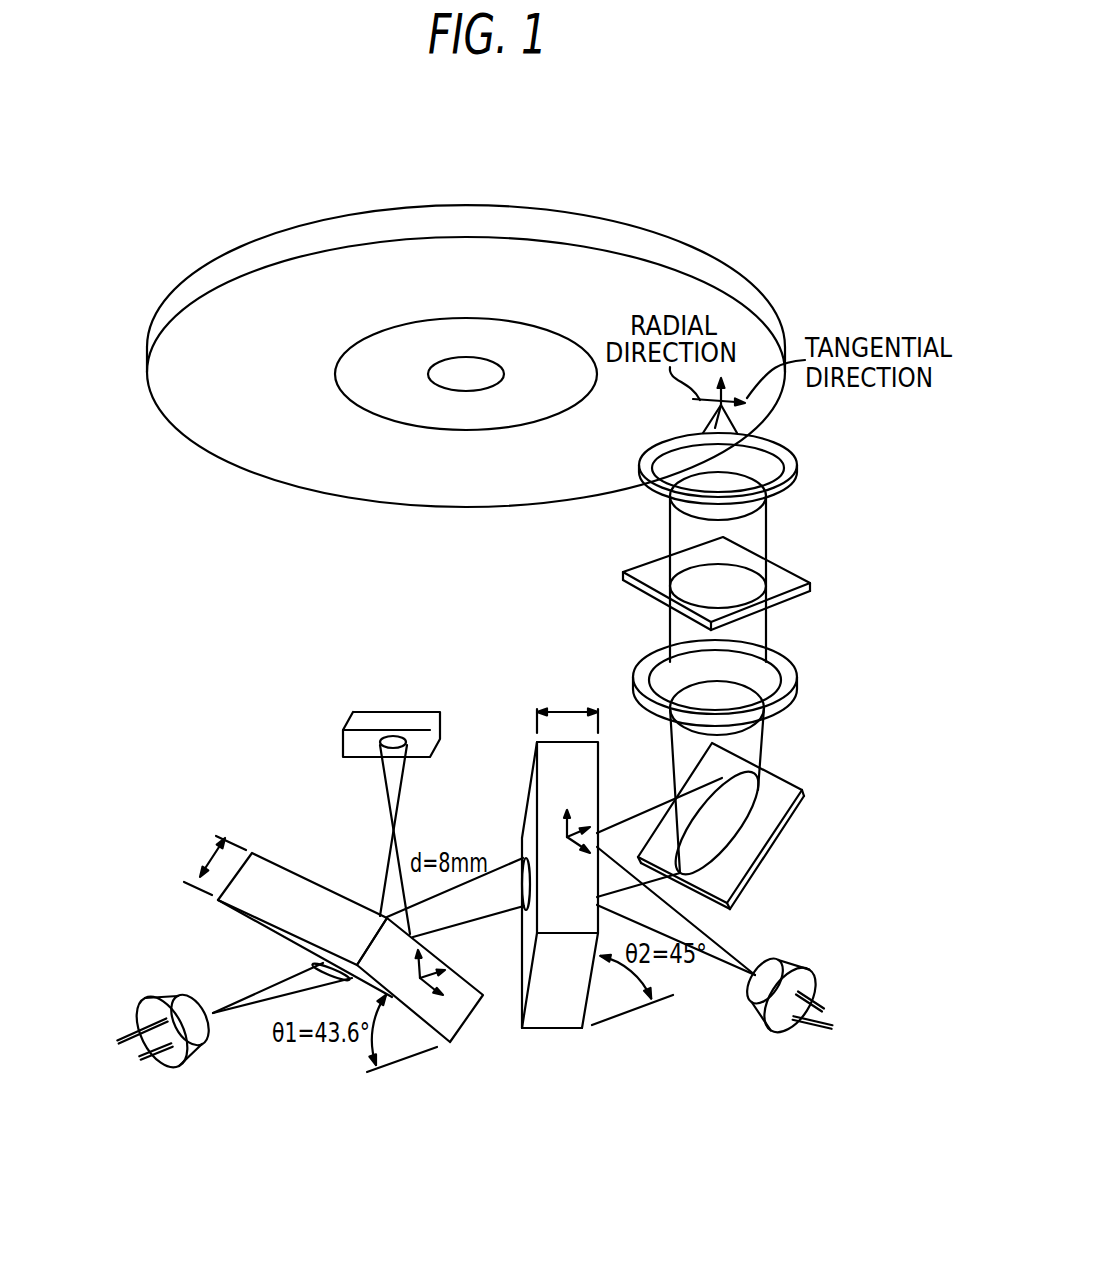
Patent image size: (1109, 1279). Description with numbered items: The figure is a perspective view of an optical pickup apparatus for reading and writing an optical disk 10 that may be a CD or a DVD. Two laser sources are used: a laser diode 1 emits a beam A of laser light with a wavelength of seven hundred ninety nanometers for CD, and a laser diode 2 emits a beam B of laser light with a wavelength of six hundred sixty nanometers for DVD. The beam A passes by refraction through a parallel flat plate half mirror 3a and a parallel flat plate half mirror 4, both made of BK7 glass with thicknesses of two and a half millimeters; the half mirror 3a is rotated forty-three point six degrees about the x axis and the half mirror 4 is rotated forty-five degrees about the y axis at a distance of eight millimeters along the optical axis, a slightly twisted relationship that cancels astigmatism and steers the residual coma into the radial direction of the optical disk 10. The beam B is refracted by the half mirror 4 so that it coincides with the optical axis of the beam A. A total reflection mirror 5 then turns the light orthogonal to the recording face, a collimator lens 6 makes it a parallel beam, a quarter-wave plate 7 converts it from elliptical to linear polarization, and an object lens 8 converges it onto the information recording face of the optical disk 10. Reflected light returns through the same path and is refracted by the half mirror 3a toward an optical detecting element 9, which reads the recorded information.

The laser diode 1 is at (172, 1065).
The laser diode 2 is at (790, 1036).
The parallel flat plate half mirror 3a is at (450, 1040).
The parallel flat plate half mirror 4 is at (563, 1030).
The total reflection mirror 5 is at (768, 843).
The collimator lens 6 is at (790, 662).
The quarter-wave plate 7 is at (793, 567).
The object lens 8 is at (787, 455).
The optical detecting element 9 is at (360, 711).
The optical disk 10 is at (660, 234).
The beam of laser light A is at (260, 993).
The beam of laser light B is at (728, 950).